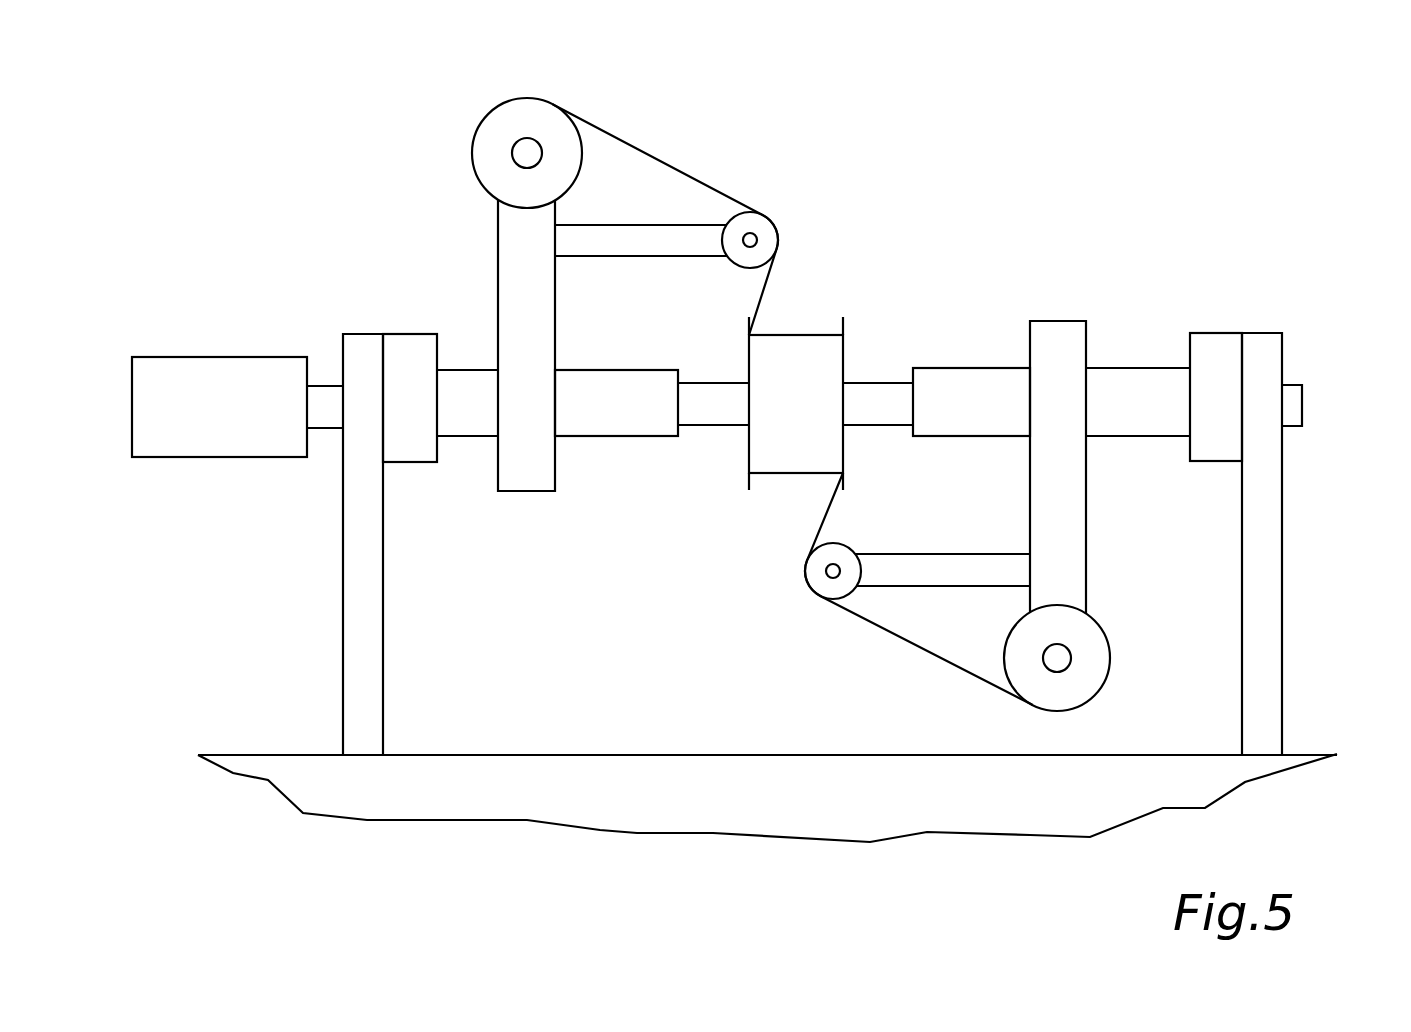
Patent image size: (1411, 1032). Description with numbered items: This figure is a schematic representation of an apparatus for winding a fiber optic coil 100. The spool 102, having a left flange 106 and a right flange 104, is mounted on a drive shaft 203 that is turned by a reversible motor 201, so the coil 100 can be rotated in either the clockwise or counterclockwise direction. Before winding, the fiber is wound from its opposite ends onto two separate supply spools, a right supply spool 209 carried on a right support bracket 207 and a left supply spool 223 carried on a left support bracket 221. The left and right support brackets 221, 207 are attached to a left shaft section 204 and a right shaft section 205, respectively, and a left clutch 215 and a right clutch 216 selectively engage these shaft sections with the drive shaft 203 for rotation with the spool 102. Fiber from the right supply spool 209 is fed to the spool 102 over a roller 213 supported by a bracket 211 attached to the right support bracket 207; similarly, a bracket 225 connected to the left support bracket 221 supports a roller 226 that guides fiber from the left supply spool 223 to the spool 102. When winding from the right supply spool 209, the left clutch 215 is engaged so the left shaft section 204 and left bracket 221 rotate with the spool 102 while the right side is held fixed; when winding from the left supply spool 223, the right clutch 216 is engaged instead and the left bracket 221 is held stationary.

The coil 100 is at (816, 380).
The spool 102 is at (762, 475).
The right flange 104 is at (850, 323).
The left flange 106 is at (750, 482).
The motor 201 is at (205, 357).
The drive shaft 203 is at (328, 430).
The left shaft section 204 is at (622, 370).
The right shaft section 205 is at (1137, 368).
The right support bracket 207 is at (1055, 321).
The right supply spool 209 is at (1105, 682).
The bracket 211 is at (940, 555).
The roller 213 is at (840, 546).
The left clutch 215 is at (405, 462).
The right clutch 216 is at (1225, 333).
The left support bracket 221 is at (563, 491).
The left supply spool 223 is at (524, 106).
The bracket 225 is at (655, 257).
The roller 226 is at (775, 238).